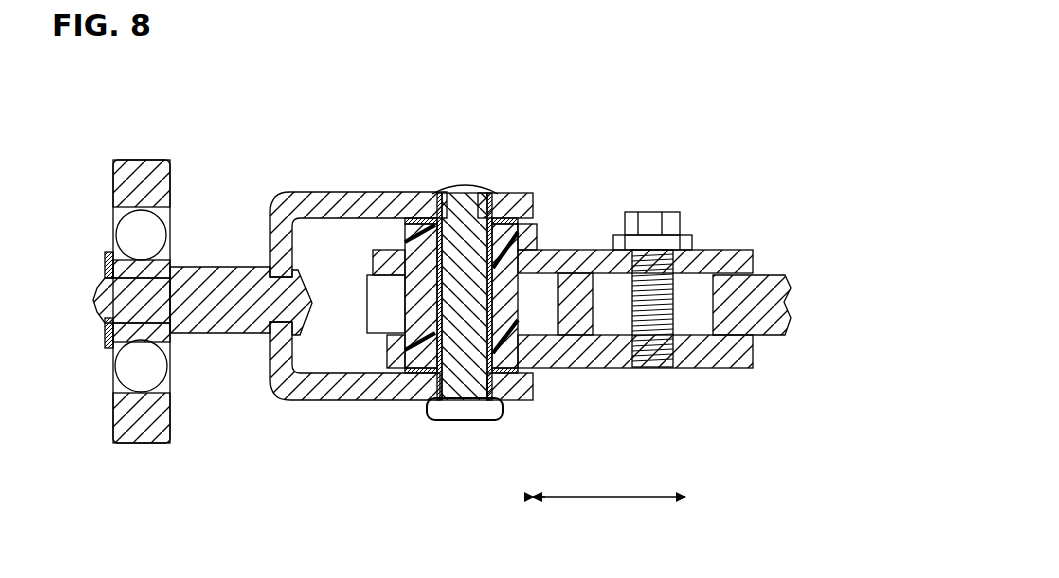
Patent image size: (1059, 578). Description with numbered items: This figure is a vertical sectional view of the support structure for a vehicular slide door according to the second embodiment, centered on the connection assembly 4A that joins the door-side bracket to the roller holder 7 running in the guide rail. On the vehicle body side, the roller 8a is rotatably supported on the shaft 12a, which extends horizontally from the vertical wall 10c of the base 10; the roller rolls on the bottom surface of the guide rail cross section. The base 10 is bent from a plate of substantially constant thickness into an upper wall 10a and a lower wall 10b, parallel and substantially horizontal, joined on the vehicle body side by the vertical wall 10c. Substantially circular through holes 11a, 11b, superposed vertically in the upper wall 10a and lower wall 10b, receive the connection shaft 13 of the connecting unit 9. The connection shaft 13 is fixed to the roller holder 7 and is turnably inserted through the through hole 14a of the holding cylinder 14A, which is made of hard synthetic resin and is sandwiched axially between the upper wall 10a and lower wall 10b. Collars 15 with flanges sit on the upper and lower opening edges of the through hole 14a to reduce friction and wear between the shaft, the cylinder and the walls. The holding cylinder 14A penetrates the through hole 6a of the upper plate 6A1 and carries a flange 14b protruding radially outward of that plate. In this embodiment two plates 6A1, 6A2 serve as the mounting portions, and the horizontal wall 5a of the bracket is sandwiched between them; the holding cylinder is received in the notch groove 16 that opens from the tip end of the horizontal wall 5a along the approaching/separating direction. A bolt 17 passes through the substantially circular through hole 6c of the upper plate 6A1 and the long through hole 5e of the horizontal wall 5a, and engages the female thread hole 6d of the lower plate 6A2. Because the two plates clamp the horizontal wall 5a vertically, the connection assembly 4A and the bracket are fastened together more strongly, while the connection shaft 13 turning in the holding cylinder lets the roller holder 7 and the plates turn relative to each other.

The connection assembly 4A is at (295, 128).
The roller 8a is at (112, 172).
The shaft 12a is at (213, 340).
The base 10 is at (288, 194).
The roller holder 7 is at (268, 198).
The upper wall 10a is at (350, 191).
The lower wall 10b is at (322, 401).
The vertical wall 10c is at (275, 372).
The through hole 6a is at (407, 276).
The through hole 14a is at (407, 314).
The collar 15 is at (410, 215).
The connecting unit 9 is at (543, 83).
The connection shaft 13 is at (468, 192).
The holding cylinder 14A is at (500, 192).
The flange 14b is at (530, 232).
The through hole 11a is at (462, 186).
The through hole 11b is at (488, 418).
The upper plate 6A1 is at (755, 260).
The lower plate 6A2 is at (755, 350).
The notch groove 16 is at (548, 330).
The female thread hole 6d is at (655, 368).
The bolt 17 is at (640, 212).
The through hole 6c is at (668, 235).
The long through hole 5e is at (712, 356).
The horizontal wall 5a is at (792, 296).